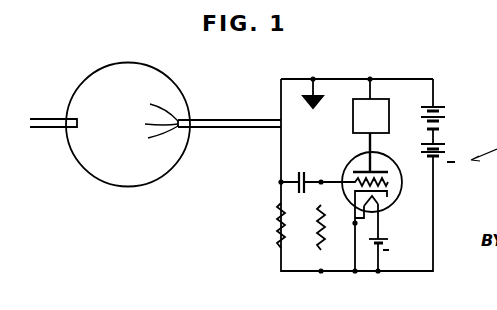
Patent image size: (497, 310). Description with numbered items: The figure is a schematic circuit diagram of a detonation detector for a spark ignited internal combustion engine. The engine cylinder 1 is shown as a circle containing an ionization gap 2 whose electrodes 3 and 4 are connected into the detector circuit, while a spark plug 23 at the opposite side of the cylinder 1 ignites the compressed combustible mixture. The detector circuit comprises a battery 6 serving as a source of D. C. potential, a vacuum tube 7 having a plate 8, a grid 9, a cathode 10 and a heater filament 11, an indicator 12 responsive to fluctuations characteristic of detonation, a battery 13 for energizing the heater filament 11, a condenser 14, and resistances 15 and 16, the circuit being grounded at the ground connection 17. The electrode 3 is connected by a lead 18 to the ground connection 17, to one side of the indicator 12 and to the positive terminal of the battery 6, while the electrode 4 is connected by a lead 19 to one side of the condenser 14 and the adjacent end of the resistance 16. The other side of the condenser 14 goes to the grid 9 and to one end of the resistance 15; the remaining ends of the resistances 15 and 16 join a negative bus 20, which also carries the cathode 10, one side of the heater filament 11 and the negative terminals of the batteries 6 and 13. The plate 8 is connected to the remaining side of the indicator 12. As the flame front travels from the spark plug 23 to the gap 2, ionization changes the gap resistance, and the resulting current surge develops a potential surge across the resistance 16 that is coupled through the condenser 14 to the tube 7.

The cylinder 1 is at (115, 72).
The ionization gap 2 is at (155, 124).
The electrode 3 is at (157, 108).
The electrode 4 is at (157, 137).
The battery 6 is at (446, 124).
The vacuum tube 7 is at (393, 173).
The plate 8 is at (381, 170).
The grid 9 is at (391, 182).
The cathode 10 is at (388, 191).
The heater filament 11 is at (384, 203).
The indicator 12 is at (389, 106).
The battery 13 is at (388, 247).
The condenser 14 is at (301, 170).
The resistance 15 is at (318, 222).
The resistance 16 is at (277, 215).
The ground connection 17 is at (306, 104).
The lead 18 is at (224, 118).
The lead 19 is at (223, 130).
The negative bus 20 is at (382, 273).
The spark plug 23 is at (78, 121).